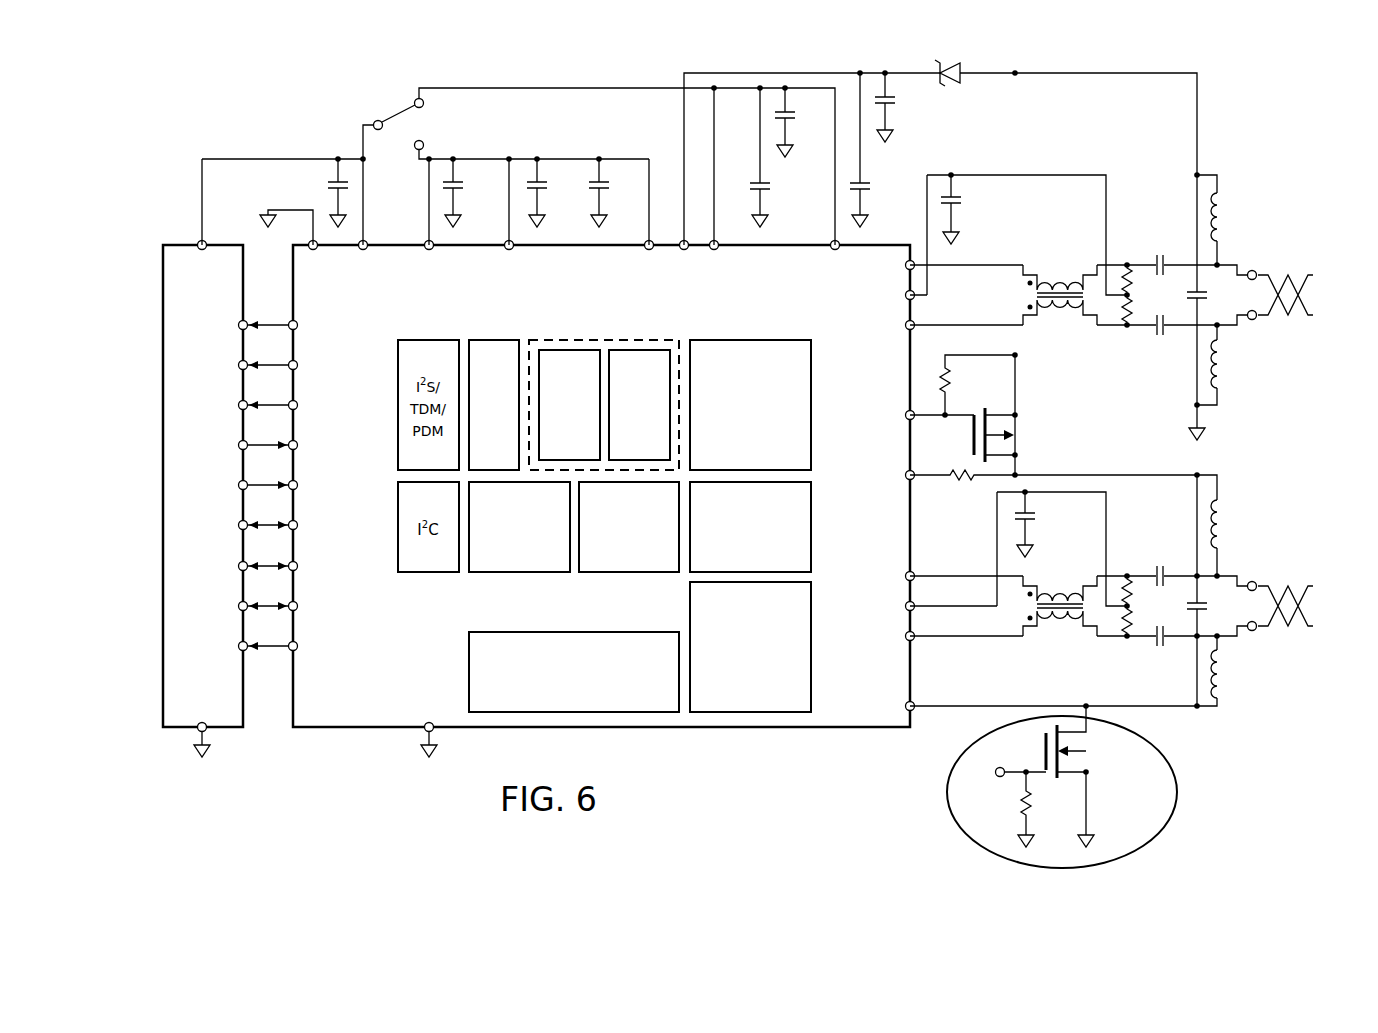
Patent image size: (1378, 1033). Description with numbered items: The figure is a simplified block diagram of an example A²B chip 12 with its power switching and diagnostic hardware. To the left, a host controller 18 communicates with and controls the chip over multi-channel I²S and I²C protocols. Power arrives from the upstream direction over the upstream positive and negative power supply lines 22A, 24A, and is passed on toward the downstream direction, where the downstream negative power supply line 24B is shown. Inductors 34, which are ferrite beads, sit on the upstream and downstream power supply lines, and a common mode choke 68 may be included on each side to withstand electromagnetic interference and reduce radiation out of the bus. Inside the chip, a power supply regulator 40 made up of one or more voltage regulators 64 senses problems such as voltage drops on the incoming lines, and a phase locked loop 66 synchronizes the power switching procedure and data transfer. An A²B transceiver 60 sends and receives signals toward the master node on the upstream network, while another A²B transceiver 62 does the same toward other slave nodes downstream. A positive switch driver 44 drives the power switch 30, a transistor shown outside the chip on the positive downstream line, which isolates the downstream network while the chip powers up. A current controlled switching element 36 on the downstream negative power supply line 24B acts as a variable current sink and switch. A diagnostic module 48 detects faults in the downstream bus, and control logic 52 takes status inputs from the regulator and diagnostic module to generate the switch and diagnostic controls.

The A²B chip 12 is at (352, 732).
The host controller 18 is at (191, 552).
The upstream positive power supply line 22A is at (560, 88).
The upstream negative power supply line 24A is at (1105, 327).
The downstream negative power supply line 24B is at (1183, 708).
The power switch 30 is at (972, 443).
The inductors 34 is at (1232, 384).
The current controlled switching element 36 is at (574, 632).
The power supply regulator 40 is at (606, 334).
The positive switch driver 44 is at (630, 574).
The diagnostic module 48 is at (811, 524).
The control logic 52 is at (520, 574).
The A²B transceiver 60 is at (750, 340).
The A²B transceiver 62 is at (811, 644).
The voltage regulators 64 is at (651, 436).
The phase locked loop 66 is at (482, 436).
The common mode choke 68 is at (1061, 622).